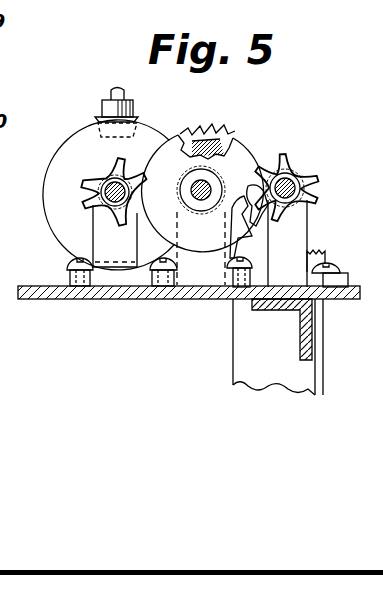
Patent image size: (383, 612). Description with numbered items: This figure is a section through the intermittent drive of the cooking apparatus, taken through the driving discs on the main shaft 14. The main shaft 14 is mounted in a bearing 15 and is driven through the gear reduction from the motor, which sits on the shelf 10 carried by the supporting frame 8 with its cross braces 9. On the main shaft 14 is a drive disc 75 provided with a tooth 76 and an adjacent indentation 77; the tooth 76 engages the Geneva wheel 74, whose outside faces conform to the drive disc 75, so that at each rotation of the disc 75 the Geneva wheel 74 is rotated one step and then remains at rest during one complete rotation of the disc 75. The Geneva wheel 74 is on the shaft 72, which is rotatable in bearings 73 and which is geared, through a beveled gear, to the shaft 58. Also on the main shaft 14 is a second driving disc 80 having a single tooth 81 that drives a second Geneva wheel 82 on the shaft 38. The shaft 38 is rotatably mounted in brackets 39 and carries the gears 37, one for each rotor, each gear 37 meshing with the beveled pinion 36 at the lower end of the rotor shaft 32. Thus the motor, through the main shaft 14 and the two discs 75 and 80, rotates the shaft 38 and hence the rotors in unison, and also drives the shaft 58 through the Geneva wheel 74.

The supporting frame 8 is at (237, 371).
The cross braces 9 is at (280, 308).
The shelf 10 is at (100, 300).
The main shaft 14 is at (210, 189).
The bearing 15 is at (190, 272).
The shaft 32 is at (114, 92).
The beveled gear or pinion 36 is at (97, 112).
The gear 37 is at (57, 132).
The shaft 38 is at (103, 191).
The brackets 39 is at (97, 235).
The shaft 58 is at (0, 72).
The shaft 72 is at (288, 184).
The bearings 73 is at (305, 221).
The Geneva wheel 74 is at (304, 176).
The drive disc 75 is at (210, 247).
The tooth 76 is at (266, 222).
The indentation 77 is at (249, 227).
The second driving disc 80 is at (186, 134).
The single tooth 81 is at (223, 131).
The second Geneva wheel 82 is at (86, 207).